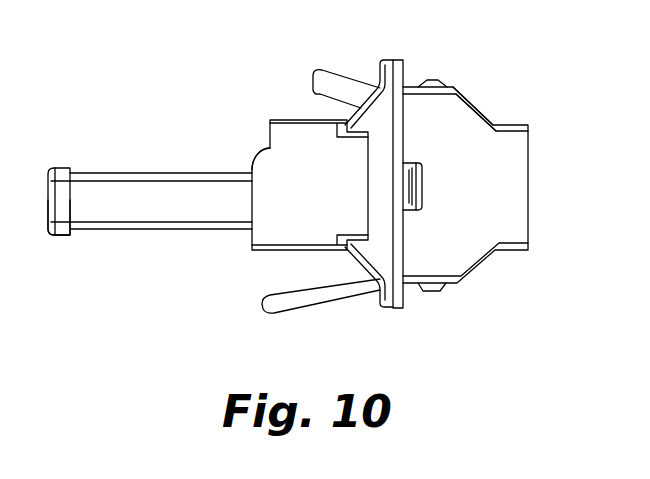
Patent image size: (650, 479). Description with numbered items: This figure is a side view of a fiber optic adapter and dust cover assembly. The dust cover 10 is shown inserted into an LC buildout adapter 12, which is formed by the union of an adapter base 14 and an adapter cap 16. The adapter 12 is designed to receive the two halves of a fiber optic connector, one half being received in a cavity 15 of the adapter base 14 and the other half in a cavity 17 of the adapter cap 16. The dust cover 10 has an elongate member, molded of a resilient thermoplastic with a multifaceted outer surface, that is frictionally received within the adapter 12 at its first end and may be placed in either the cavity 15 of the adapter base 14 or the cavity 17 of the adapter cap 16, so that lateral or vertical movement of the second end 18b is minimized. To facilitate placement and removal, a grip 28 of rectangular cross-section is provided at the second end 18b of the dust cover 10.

The dust cover 10 is at (147, 171).
The LC buildout adapter 12 is at (413, 68).
The adapter base 14 is at (477, 108).
The cavity 15 is at (531, 178).
The adapter cap 16 is at (265, 253).
The cavity 17 is at (252, 170).
The second end 18b is at (50, 237).
The grip 28 is at (50, 167).